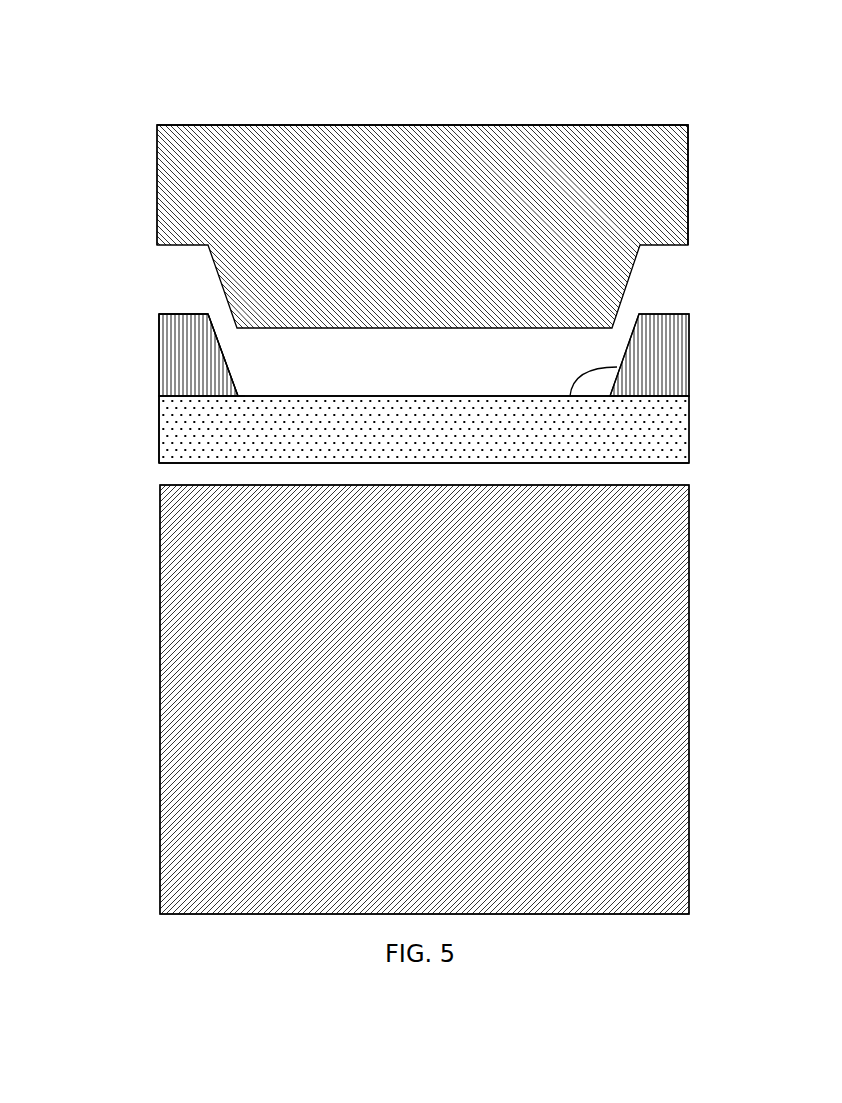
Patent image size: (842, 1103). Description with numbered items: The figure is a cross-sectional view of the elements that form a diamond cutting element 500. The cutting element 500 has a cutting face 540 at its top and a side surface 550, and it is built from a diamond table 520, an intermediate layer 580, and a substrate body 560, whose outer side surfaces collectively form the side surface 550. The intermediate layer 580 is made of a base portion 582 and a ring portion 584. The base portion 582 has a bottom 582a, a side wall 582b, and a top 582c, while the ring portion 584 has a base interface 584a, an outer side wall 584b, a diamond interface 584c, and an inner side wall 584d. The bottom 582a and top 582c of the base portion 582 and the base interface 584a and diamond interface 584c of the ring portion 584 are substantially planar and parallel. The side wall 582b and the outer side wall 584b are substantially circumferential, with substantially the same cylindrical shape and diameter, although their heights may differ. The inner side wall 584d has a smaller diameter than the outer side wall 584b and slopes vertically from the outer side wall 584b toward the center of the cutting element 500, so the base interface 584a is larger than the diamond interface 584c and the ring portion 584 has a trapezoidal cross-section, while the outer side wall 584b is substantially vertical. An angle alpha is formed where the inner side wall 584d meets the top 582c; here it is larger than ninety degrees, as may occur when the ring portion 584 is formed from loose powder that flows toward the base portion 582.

The cutting element 500 is at (165, 83).
The diamond table 520 is at (445, 232).
The cutting face 540 is at (597, 123).
The side surface 550 is at (157, 180).
The substrate body 560 is at (330, 729).
The intermediate layer 580 is at (703, 314).
The base portion 582 is at (424, 429).
The bottom 582a is at (190, 467).
The side wall 582b is at (157, 427).
The top 582c is at (517, 395).
The ring portion 584 is at (424, 355).
The base interface 584a is at (223, 398).
The outer side wall 584b is at (157, 337).
The diamond interface 584c is at (175, 313).
The inner side wall 584d is at (228, 372).